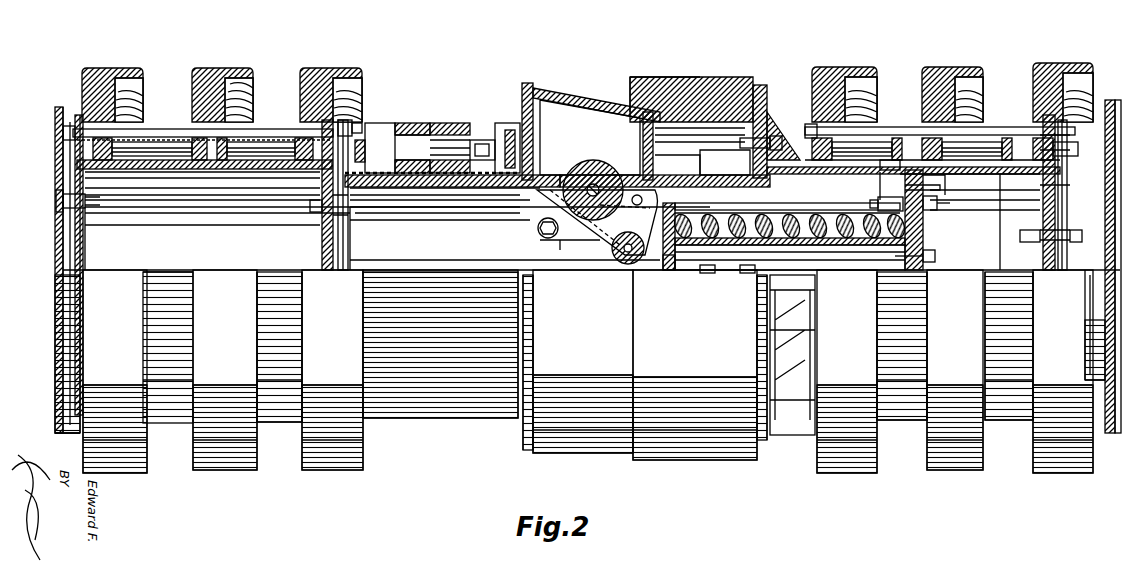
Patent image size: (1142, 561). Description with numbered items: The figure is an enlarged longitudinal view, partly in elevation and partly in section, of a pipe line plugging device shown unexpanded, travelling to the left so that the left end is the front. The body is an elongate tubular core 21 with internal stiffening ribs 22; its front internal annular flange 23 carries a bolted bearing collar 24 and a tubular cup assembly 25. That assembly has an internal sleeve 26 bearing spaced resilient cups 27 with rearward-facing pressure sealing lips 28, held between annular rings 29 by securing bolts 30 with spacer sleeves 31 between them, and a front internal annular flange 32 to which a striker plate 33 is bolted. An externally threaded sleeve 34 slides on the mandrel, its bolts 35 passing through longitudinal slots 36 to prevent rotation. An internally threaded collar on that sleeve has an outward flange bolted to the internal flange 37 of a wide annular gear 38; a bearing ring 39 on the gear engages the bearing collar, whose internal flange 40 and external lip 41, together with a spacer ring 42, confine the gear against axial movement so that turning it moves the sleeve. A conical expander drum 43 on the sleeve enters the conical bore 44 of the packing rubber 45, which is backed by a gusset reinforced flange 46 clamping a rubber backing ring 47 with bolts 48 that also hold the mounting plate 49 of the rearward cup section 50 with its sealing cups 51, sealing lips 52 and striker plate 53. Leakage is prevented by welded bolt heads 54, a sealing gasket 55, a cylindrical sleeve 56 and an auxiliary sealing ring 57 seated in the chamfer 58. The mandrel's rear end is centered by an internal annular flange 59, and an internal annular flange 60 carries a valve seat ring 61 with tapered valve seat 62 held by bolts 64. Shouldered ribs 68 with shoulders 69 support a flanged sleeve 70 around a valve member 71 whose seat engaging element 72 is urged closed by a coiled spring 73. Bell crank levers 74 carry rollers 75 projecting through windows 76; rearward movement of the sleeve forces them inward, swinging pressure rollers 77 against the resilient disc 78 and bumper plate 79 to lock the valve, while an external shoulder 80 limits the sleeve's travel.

The tubular core 21 is at (412, 172).
The stiffening ribs 22 is at (433, 208).
The internal annular flange 23 is at (322, 232).
The bearing collar 24 is at (375, 197).
The tubular cup assembly 25 is at (220, 180).
The internal sleeve 26 is at (145, 156).
The resilient cups 27 is at (97, 75).
The pressure sealing lips 28 is at (250, 90).
The annular rings 29 is at (150, 412).
The securing bolts 30 is at (170, 128).
The spacer sleeves 31 is at (266, 138).
The internal annular flange 32 is at (88, 202).
The striker plate 33 is at (62, 146).
The externally threaded sleeve 34 is at (396, 168).
The bolts 35 is at (540, 232).
The longitudinal slots 36 is at (568, 240).
The internal flange 37 is at (457, 155).
The annular gear 38 is at (440, 400).
The annular bearing ring 39 is at (350, 125).
The annular internal flange 40 is at (318, 201).
The annular external lip 41 is at (372, 158).
The spacer ring 42 is at (318, 175).
The expander drum 43 is at (580, 430).
The conical bore 44 is at (635, 92).
The packing rubber 45 is at (642, 80).
The gusset reinforced flange 46 is at (737, 215).
The rubber backing ring 47 is at (772, 118).
The bolts 48 is at (772, 136).
The annular mounting plate 49 is at (796, 176).
The rearward cup section 50 is at (868, 128).
The sealing cups 51 is at (833, 458).
The sealing lips 52 is at (1030, 80).
The striker plate 53 is at (1110, 440).
The bolt heads 54 is at (720, 166).
The sealing gasket 55 is at (764, 180).
The cylindrical sleeve 56 is at (725, 148).
The auxiliary sealing ring 57 is at (765, 112).
The chamfer 58 is at (728, 80).
The internal annular flange 59 is at (895, 150).
The internal annular flange 60 is at (892, 208).
The valve seat ring 61 is at (925, 218).
The valve seat 62 is at (925, 230).
The bolts 64 is at (938, 204).
The shouldered ribs 68 is at (787, 199).
The shoulders 69 is at (673, 218).
The flanged sleeve 70 is at (712, 268).
The valve member 71 is at (857, 260).
The valve seat engaging element 72 is at (930, 256).
The coiled spring 73 is at (760, 270).
The bell crank levers 74 is at (612, 228).
The rollers 75 is at (582, 180).
The windows 76 is at (612, 166).
The pressure rollers 77 is at (628, 265).
The resilient disc 78 is at (685, 268).
The bumper plate 79 is at (655, 268).
The external shoulder 80 is at (690, 176).